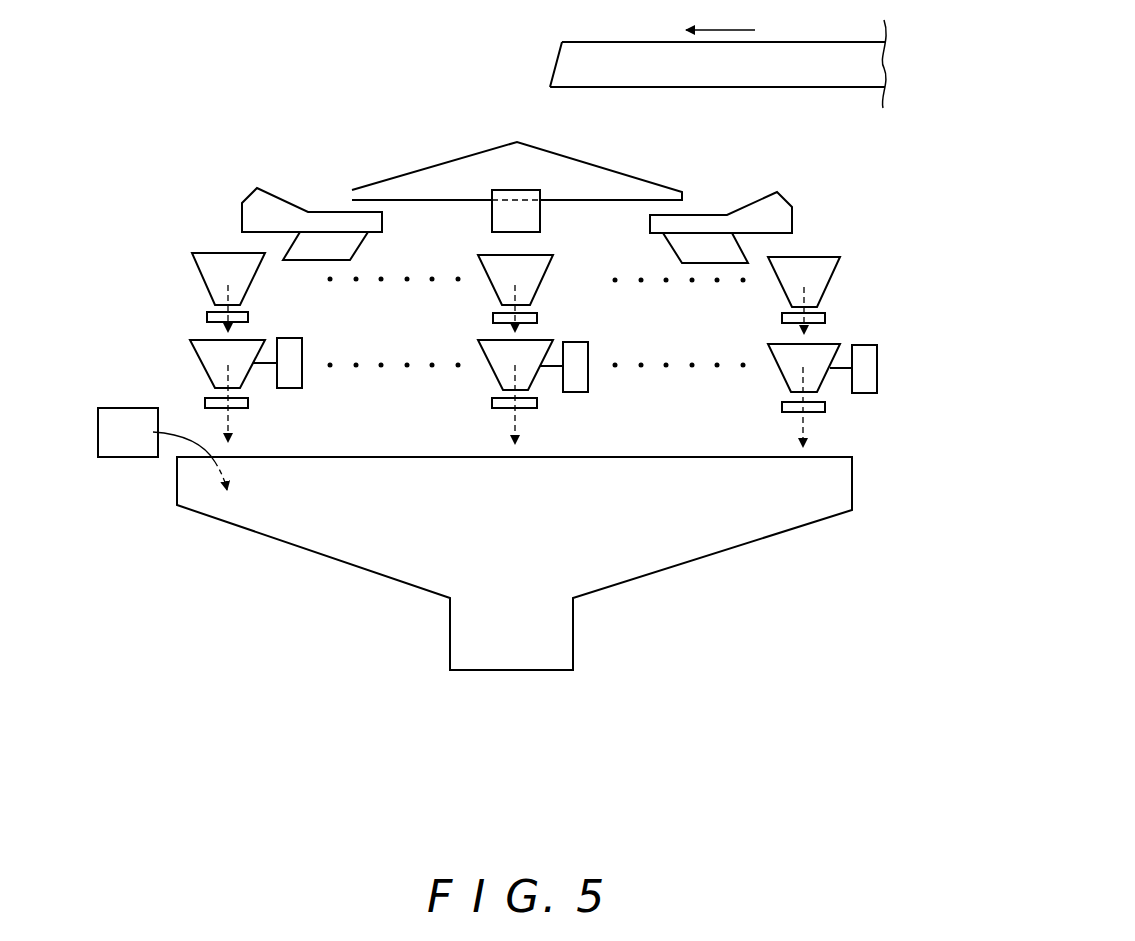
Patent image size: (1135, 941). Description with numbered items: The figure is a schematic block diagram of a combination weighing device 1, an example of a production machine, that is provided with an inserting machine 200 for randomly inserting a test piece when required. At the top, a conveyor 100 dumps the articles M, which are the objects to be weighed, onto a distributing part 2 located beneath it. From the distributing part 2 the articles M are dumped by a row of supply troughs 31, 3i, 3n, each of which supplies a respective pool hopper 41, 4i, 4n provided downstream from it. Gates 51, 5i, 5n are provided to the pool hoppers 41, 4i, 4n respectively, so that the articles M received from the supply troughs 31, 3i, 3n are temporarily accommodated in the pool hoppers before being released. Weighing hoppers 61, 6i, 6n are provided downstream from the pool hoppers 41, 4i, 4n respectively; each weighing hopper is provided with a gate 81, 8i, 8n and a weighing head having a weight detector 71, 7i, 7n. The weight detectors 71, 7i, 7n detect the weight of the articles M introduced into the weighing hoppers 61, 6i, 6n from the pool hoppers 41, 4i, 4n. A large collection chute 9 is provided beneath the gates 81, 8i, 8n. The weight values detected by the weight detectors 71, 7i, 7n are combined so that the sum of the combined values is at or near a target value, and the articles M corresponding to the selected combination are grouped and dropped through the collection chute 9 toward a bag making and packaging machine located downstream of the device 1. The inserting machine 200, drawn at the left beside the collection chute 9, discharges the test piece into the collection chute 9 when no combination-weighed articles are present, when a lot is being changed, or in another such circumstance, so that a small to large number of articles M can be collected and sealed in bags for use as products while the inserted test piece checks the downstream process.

The combination weighing device 1 is at (376, 120).
The distributing part 2 is at (455, 160).
The supply trough 31 is at (252, 192).
The supply trough 3i is at (545, 226).
The supply trough 3n is at (782, 200).
The pool hopper 41 is at (192, 270).
The pool hopper 4i is at (483, 273).
The pool hopper 4n is at (840, 270).
The gate 51 is at (207, 317).
The gate 5i is at (493, 318).
The gate 5n is at (782, 320).
The weighing hopper 61 is at (197, 358).
The weighing hopper 6i is at (485, 360).
The weighing hopper 6n is at (775, 362).
The weight detector 71 is at (302, 383).
The weight detector 7i is at (588, 385).
The weight detector 7n is at (877, 388).
The gate 81 is at (205, 402).
The gate 8i is at (492, 402).
The gate 8n is at (782, 405).
The collection chute 9 is at (762, 538).
The conveyor 100 is at (653, 87).
The inserting machine 200 is at (128, 457).
The articles M is at (548, 70).